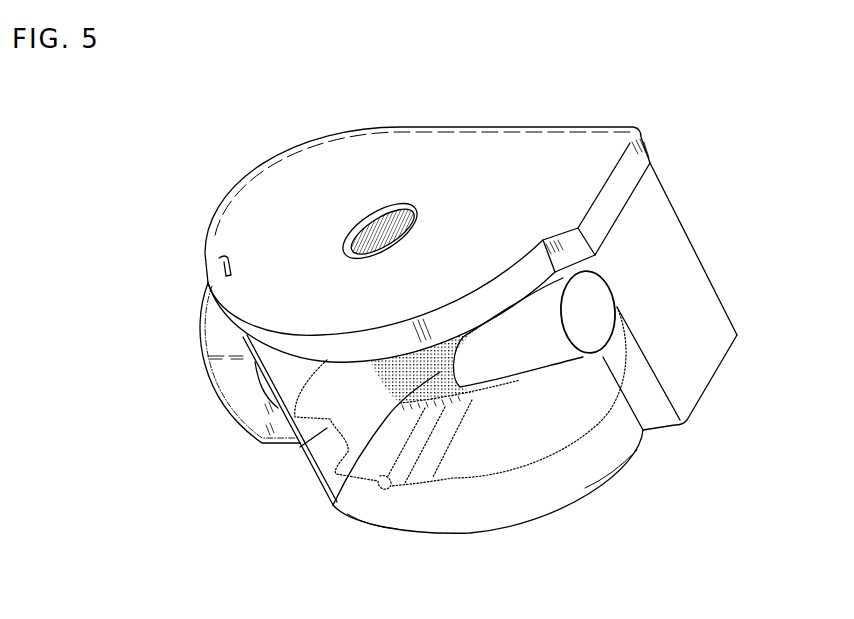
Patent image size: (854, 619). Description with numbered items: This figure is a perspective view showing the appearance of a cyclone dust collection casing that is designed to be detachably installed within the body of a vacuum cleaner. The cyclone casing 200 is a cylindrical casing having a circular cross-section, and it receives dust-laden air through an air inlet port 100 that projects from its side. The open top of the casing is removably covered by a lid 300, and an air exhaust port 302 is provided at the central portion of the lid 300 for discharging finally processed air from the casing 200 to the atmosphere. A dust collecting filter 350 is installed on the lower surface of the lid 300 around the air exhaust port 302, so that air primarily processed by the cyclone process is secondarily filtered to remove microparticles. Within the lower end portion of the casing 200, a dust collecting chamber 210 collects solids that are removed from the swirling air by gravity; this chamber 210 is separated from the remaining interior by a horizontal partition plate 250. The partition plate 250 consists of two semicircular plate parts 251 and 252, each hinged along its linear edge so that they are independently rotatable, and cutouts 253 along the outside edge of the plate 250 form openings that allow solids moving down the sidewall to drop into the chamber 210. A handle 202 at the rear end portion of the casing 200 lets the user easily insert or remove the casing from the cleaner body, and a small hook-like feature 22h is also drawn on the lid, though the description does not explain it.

The lid 300 is at (513, 178).
The air exhaust port 302 is at (382, 208).
The air inlet port 100 is at (613, 303).
The hook 22h is at (219, 260).
The handle 202 is at (217, 363).
The cyclone casing 200 is at (267, 452).
The dust collecting chamber 210 is at (560, 468).
The dust collecting filter 350 is at (333, 503).
The cutouts 253 is at (300, 447).
The semicircular plate part 251 is at (382, 453).
The semicircular plate part 252 is at (450, 465).
The horizontal partition plate 250 is at (487, 577).